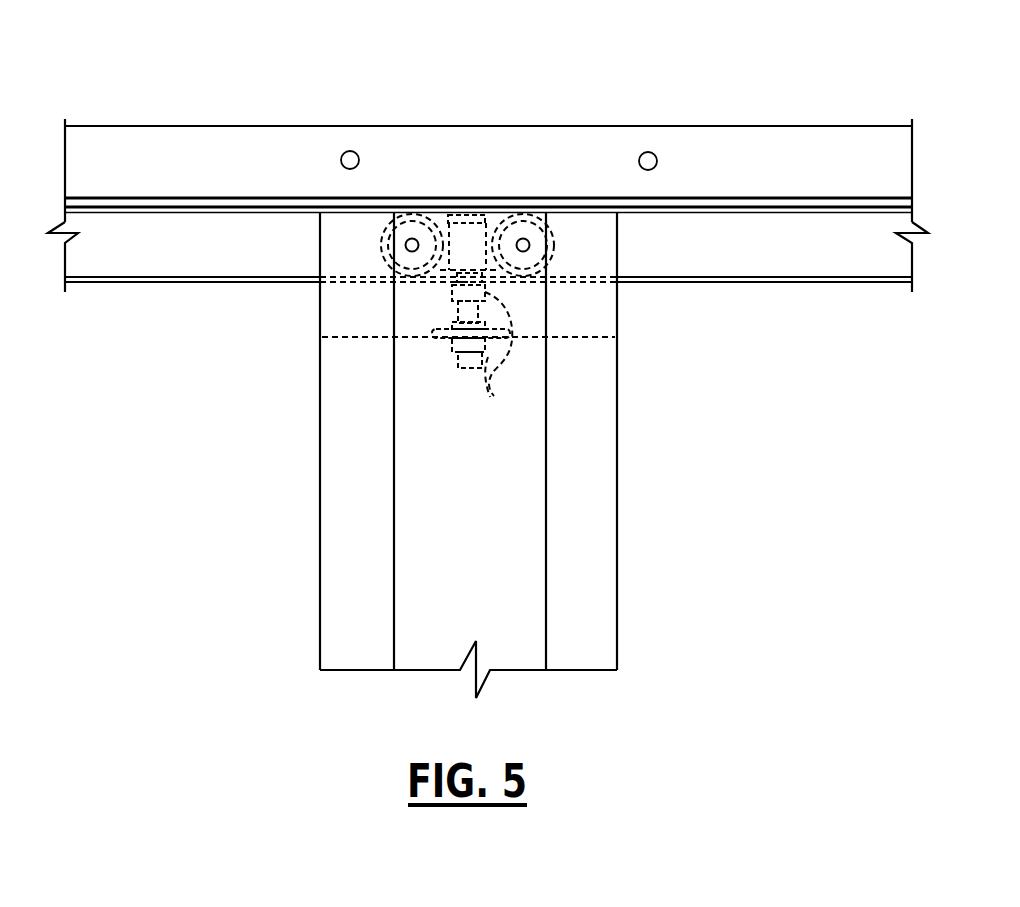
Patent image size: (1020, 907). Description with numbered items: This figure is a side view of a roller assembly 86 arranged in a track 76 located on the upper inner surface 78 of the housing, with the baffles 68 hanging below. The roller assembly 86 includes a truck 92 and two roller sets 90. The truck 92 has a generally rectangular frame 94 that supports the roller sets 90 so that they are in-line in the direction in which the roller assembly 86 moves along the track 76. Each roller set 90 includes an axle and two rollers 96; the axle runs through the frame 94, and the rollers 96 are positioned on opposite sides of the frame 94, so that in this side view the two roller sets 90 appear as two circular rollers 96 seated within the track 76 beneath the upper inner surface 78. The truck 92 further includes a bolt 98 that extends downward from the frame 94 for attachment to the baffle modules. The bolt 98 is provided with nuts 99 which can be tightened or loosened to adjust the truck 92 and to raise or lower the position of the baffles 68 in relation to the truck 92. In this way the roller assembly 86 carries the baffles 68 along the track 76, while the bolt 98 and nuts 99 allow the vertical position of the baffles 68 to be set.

The baffles 68 is at (617, 513).
The track 76 is at (755, 283).
The upper inner surface 78 is at (828, 198).
The roller assembly 86 is at (492, 168).
The roller sets 90 is at (355, 227).
The truck 92 is at (440, 200).
The frame 94 is at (487, 273).
The rollers 96 is at (381, 250).
The bolt 98 is at (452, 305).
The nuts 99 is at (498, 364).